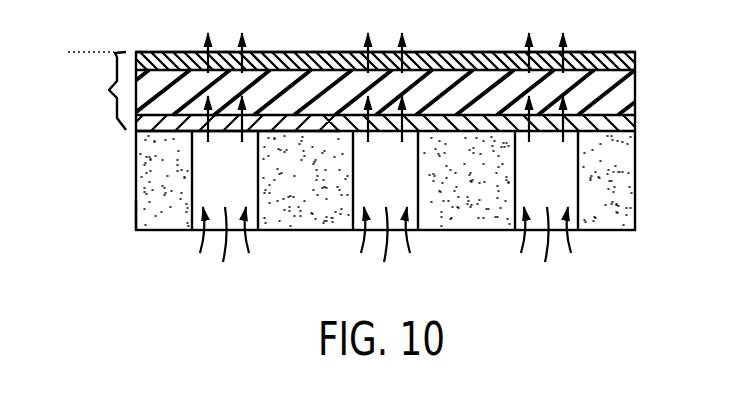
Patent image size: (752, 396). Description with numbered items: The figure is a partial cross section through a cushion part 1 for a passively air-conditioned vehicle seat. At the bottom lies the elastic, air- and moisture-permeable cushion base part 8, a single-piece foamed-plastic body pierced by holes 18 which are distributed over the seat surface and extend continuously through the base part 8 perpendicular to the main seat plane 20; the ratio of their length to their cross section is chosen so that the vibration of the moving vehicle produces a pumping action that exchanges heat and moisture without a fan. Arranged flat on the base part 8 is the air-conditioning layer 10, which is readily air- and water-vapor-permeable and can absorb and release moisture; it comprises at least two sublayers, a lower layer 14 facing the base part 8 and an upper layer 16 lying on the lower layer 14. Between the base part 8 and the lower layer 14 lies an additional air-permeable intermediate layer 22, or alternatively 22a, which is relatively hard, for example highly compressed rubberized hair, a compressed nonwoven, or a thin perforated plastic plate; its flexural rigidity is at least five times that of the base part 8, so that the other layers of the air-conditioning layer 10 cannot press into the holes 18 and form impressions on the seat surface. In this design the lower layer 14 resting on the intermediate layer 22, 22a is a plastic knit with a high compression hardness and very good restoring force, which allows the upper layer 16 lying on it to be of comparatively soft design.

The cushion part 1 is at (127, 205).
The cushion base part 8 is at (620, 178).
The air-conditioning layer 10 is at (109, 90).
The lower layer 14 is at (632, 92).
The upper layer 16 is at (633, 60).
The holes 18 is at (385, 164).
The main seat plane 20 is at (93, 51).
The intermediate layer 22 is at (137, 133).
The intermediate layer 22a is at (633, 120).